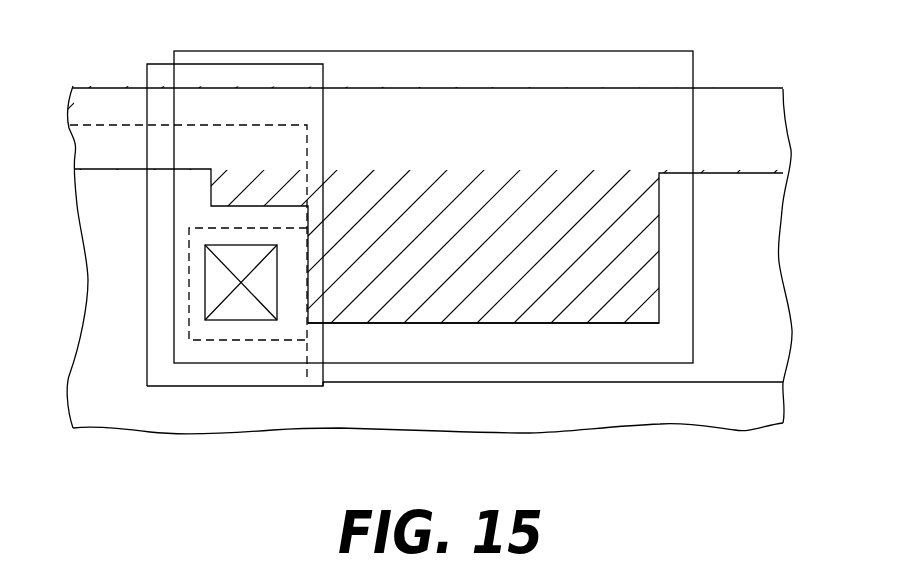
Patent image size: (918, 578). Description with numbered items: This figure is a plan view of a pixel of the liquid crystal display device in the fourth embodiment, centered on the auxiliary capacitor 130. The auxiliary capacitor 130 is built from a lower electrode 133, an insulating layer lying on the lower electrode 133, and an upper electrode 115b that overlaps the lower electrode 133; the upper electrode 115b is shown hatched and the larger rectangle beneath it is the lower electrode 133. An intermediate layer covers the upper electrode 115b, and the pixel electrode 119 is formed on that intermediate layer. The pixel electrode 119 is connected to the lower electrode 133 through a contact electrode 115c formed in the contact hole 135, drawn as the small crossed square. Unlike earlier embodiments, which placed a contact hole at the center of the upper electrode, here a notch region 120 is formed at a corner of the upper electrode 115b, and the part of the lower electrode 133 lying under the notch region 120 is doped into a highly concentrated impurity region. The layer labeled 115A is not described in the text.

The auxiliary capacitor 130 is at (60, 277).
The isolation region 115A is at (735, 163).
The upper electrode 115b is at (537, 312).
The contact electrode 115c is at (147, 386).
The pixel electrode 119 is at (712, 382).
The lower electrode 133 is at (693, 72).
The notch region 120 is at (253, 218).
The contact hole 135 is at (247, 313).